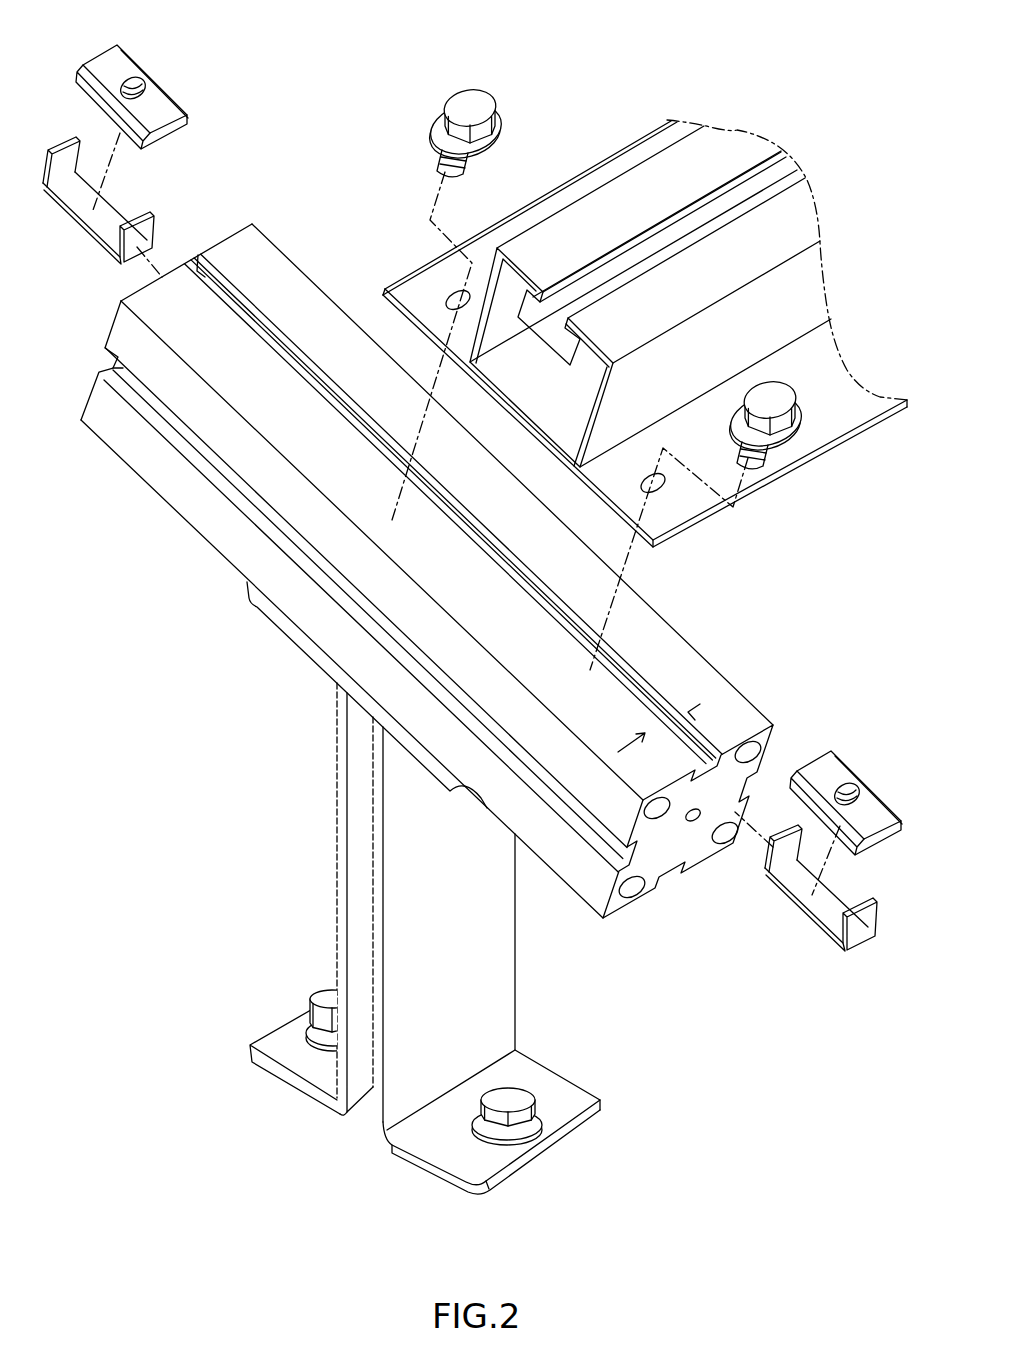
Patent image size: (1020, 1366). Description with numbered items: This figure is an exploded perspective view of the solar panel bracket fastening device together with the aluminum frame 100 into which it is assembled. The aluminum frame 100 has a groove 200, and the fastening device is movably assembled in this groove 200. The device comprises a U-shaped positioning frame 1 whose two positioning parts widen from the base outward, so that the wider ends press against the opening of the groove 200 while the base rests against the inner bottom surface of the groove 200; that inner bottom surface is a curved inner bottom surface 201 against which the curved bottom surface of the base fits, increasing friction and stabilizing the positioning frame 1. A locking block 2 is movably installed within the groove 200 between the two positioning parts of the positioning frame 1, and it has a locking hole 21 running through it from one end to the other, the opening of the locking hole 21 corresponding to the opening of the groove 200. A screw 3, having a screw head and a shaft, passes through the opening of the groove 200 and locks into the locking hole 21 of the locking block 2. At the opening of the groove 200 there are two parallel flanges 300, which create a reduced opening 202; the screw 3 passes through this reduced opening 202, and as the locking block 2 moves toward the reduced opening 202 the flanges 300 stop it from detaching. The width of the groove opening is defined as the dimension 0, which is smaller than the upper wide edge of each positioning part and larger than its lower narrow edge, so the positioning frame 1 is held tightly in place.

The aluminum frame 100 is at (753, 125).
The positioning frame 1 is at (150, 195).
The locking block 2 is at (491, 427).
The locking hole 21 is at (140, 82).
The screw 3 is at (478, 100).
The curved inner bottom surface 201 is at (728, 797).
The reduced opening 202 is at (636, 657).
The groove 200 is at (475, 610).
The flanges 300 is at (478, 508).
The width of the groove opening 0 is at (688, 712).